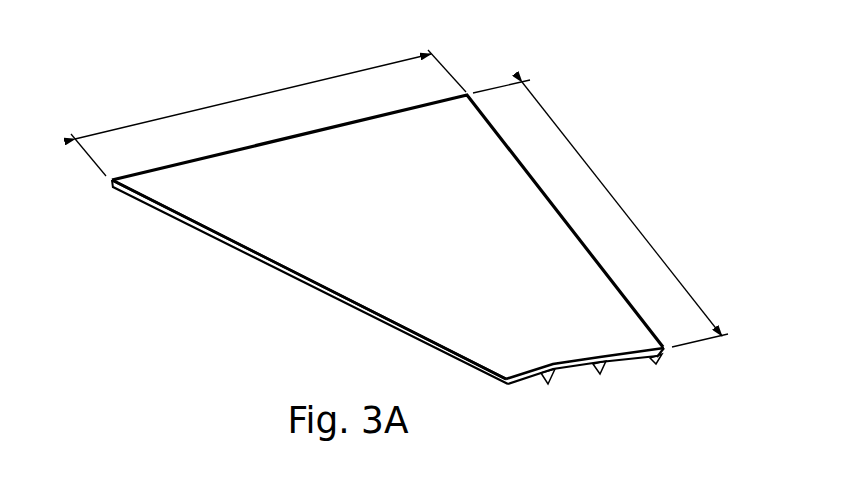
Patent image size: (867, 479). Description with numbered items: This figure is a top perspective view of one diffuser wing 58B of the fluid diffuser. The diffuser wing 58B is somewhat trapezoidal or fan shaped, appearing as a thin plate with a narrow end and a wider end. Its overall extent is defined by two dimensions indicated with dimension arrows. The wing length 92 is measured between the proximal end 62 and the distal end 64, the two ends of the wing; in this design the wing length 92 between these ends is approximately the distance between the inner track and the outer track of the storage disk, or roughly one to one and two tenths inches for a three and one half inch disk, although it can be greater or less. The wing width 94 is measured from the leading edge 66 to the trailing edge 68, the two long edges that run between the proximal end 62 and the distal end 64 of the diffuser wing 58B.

The diffuser wing 58B is at (390, 249).
The proximal end 62 is at (148, 182).
The trailing edge 68 is at (268, 266).
The distal end 64 is at (572, 372).
The leading edge 66 is at (654, 333).
The wing width 94 is at (250, 97).
The wing length 92 is at (609, 194).